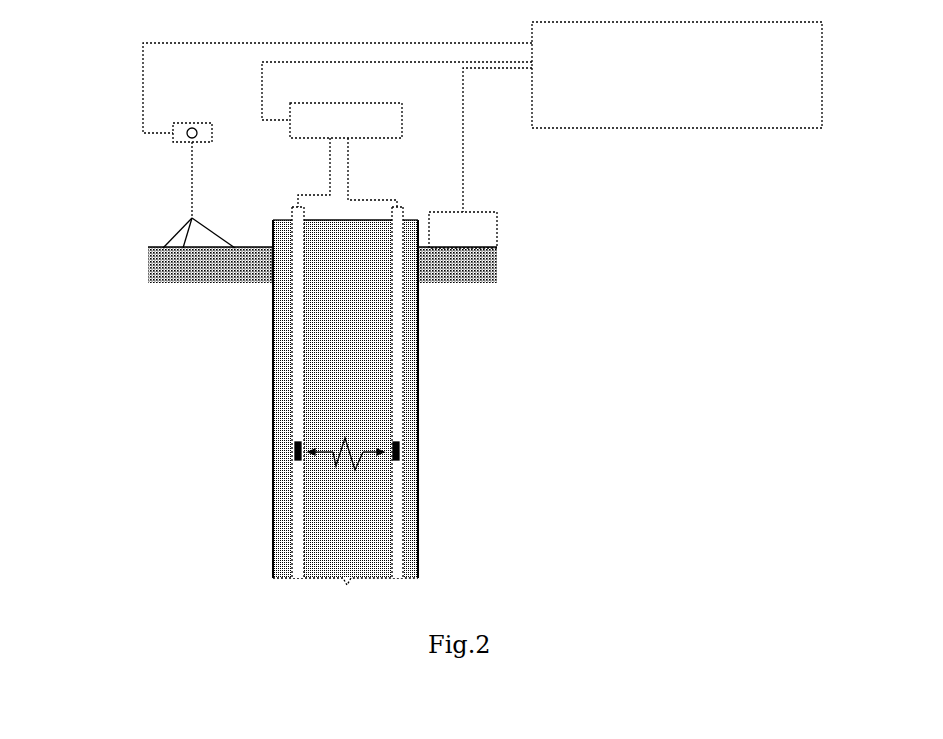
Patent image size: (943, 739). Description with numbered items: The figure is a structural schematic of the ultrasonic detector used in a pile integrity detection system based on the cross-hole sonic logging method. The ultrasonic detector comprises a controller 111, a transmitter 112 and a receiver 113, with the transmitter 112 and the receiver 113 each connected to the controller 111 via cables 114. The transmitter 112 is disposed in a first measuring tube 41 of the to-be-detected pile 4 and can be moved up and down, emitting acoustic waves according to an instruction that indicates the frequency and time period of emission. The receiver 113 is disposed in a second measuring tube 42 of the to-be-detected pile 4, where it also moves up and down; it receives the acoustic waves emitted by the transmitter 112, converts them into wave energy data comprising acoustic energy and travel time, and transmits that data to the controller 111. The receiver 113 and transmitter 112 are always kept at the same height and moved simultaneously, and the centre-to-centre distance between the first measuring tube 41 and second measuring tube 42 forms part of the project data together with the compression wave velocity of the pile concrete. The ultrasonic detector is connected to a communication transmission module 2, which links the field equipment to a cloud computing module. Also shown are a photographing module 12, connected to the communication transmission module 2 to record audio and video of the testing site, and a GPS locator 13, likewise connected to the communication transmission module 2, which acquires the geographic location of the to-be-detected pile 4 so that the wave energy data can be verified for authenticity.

The communication transmission module 2 is at (677, 75).
The photographing module 12 is at (173, 142).
The GPS locator 13 is at (477, 233).
The controller 111 is at (363, 113).
The cables 114 is at (330, 183).
The to-be-detected pile 4 is at (285, 377).
The first measuring tube 41 is at (298, 512).
The second measuring tube 42 is at (402, 507).
The transmitter 112 is at (293, 450).
The receiver 113 is at (400, 450).